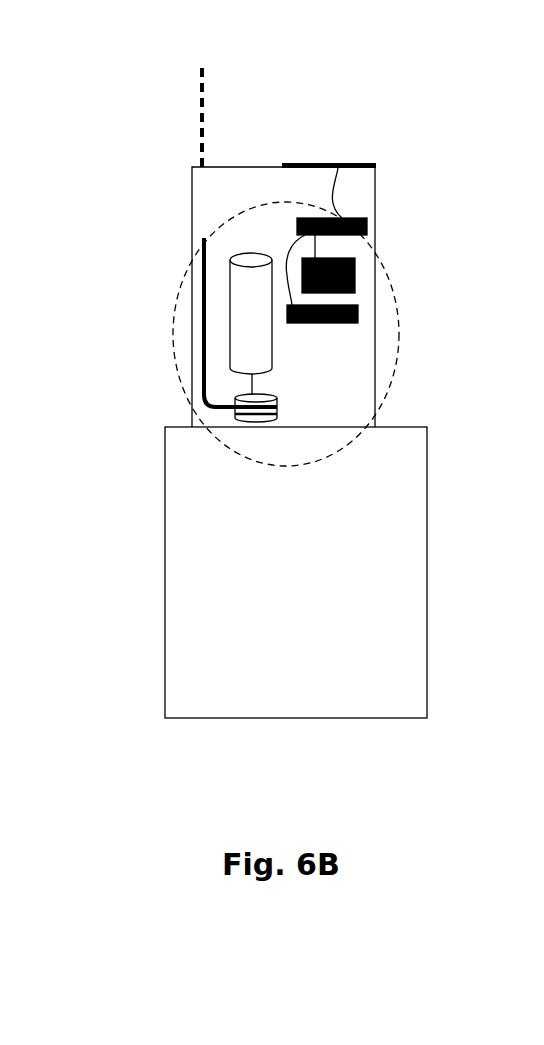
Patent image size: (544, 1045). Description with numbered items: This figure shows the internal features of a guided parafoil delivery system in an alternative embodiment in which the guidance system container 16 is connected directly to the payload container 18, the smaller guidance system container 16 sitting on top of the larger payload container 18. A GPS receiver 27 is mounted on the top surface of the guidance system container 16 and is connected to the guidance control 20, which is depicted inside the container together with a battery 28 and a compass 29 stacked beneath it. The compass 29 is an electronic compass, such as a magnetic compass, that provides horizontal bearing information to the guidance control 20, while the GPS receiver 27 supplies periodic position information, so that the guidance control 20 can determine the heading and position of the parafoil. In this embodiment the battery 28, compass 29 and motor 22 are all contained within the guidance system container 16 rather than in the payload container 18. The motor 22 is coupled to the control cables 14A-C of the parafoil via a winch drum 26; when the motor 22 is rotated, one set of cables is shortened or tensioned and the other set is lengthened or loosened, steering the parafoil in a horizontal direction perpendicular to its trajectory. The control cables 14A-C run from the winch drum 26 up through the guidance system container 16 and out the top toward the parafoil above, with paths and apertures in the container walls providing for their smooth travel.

The control cables 14A-C is at (205, 237).
The guidance system container 16 is at (187, 195).
The payload container 18 is at (428, 557).
The guidance control 20 is at (352, 215).
The motor 22 is at (250, 256).
The winch drum 26 is at (228, 394).
The GPS receiver 27 is at (342, 160).
The battery 28 is at (357, 267).
The compass 29 is at (361, 304).